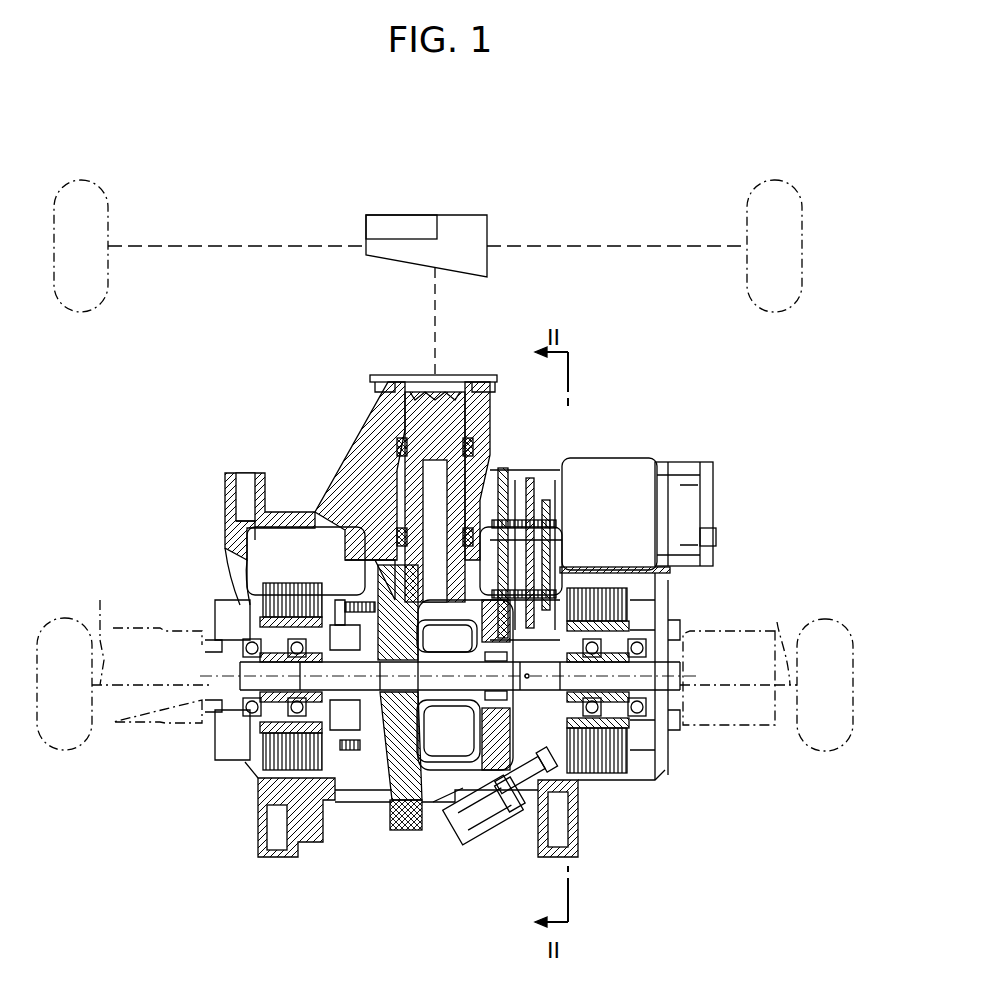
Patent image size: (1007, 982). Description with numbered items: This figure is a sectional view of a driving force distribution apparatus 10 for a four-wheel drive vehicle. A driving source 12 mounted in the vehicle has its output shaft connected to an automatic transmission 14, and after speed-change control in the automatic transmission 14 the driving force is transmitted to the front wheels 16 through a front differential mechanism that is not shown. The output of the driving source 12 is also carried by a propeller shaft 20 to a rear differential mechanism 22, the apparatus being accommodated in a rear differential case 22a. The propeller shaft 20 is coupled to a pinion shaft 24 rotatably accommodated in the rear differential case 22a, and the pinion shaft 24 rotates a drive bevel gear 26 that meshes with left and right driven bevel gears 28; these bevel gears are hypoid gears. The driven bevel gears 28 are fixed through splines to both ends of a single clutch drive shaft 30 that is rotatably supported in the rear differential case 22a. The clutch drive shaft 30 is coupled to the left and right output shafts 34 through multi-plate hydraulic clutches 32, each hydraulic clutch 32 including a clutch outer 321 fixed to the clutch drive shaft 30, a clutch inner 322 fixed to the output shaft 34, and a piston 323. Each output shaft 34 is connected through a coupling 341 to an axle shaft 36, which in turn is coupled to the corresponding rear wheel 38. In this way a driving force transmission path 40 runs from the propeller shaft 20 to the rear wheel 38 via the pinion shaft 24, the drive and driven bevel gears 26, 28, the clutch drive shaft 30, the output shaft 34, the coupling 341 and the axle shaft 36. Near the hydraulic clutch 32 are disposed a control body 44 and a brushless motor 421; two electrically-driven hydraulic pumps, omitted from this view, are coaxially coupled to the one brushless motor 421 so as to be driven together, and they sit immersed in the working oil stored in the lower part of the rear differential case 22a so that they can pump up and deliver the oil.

The driving force distribution apparatus 10 is at (606, 412).
The driving source 12 is at (388, 215).
The automatic transmission 14 is at (459, 230).
The front wheels 16 is at (108, 206).
The propeller shaft 20 is at (437, 318).
The rear differential mechanism 22 is at (445, 619).
The rear differential case 22a is at (392, 455).
The pinion shaft 24 is at (428, 407).
The drive bevel gear 26 is at (378, 564).
The driven bevel gears 28 is at (384, 660).
The clutch drive shaft 30 is at (420, 660).
The hydraulic clutch 32 is at (454, 676).
The clutch outer 321 is at (283, 586).
The clutch inner 322 is at (228, 633).
The piston 323 is at (244, 606).
The output shaft 34 is at (246, 660).
The coupling 341 is at (432, 707).
The axle shaft 36 is at (442, 628).
The rear wheel 38 is at (445, 645).
The driving force transmission path 40 is at (378, 600).
The brushless motor 421 is at (604, 496).
The control body 44 is at (602, 531).